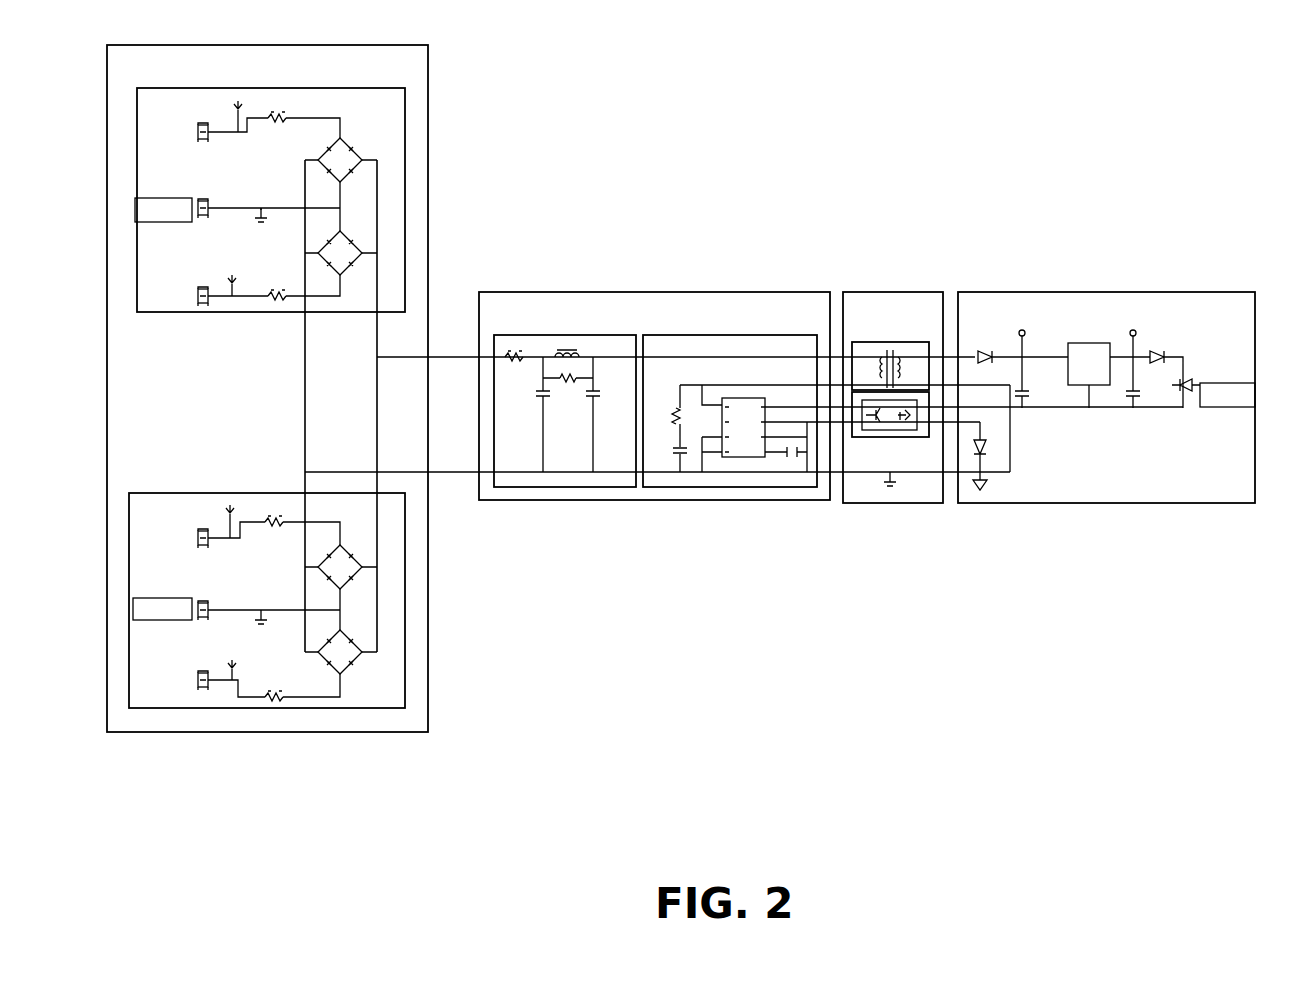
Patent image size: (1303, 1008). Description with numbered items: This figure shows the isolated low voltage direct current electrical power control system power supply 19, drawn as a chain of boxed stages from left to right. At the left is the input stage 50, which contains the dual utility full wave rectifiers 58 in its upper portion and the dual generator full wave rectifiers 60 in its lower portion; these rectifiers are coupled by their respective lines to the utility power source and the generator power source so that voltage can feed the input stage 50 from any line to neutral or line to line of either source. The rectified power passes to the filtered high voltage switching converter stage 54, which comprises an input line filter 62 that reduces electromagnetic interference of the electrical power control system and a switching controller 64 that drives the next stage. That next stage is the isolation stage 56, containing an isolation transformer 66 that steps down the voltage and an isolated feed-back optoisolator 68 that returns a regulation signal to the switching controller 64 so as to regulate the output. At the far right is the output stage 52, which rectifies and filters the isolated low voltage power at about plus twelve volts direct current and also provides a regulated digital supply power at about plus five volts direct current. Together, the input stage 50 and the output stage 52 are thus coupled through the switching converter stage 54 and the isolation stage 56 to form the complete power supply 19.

The isolated low voltage direct current electrical power control system power supply 19 is at (942, 112).
The input stage 50 is at (240, 45).
The dual utility full wave rectifiers 58 is at (240, 88).
The dual generator full wave rectifiers 60 is at (222, 493).
The filtered high voltage switching converter stage 54 is at (622, 292).
The input line filter 62 is at (561, 335).
The switching controller 64 is at (711, 335).
The isolation stage 56 is at (870, 292).
The isolation transformer 66 is at (873, 342).
The isolated feed-back optoisolator 68 is at (888, 437).
The output stage 52 is at (1076, 292).